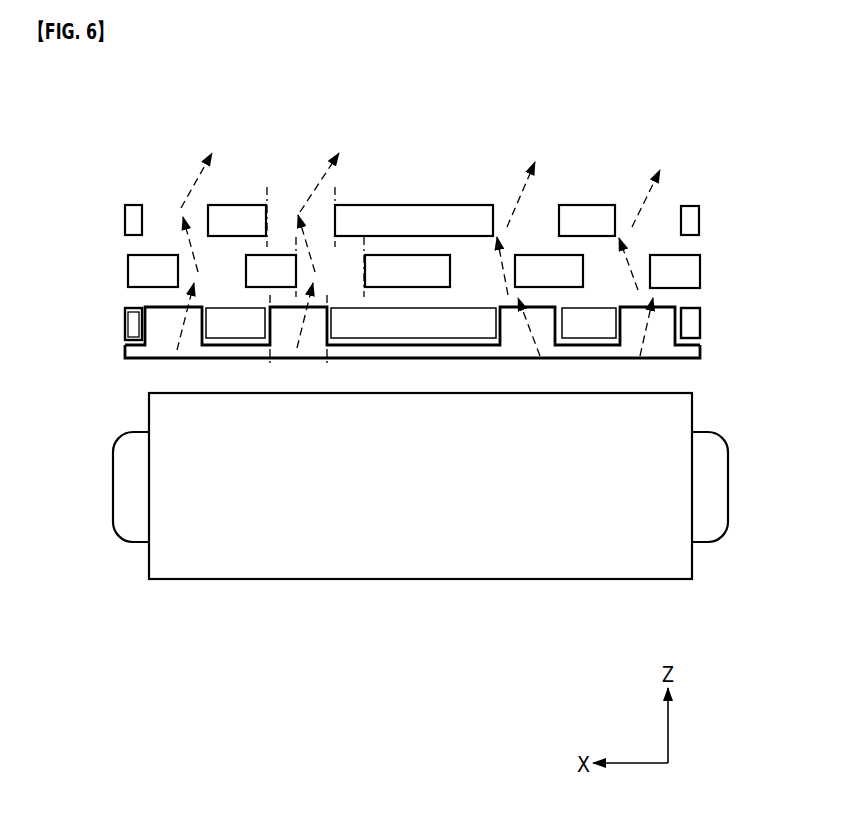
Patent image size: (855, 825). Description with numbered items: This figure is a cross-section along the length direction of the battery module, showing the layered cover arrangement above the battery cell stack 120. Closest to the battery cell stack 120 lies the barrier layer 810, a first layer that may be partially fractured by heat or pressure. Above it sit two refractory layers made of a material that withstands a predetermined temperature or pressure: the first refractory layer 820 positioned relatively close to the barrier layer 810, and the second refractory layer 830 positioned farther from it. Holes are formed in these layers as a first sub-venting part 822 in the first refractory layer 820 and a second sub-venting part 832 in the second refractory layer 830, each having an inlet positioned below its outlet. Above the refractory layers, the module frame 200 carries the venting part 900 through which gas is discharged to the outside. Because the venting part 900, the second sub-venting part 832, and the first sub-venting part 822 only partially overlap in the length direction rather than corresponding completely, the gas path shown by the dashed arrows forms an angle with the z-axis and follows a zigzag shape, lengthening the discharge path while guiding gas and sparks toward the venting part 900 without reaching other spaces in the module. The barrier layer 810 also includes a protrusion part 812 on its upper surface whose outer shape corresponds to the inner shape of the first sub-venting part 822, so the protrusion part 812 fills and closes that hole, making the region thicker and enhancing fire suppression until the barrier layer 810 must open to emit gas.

The battery cell stack 120 is at (718, 488).
The module frame 200 is at (699, 220).
The barrier layer 810 is at (700, 351).
The protrusion part 812 is at (162, 333).
The first refractory layer 820 is at (700, 320).
The first sub-venting part 822 is at (140, 320).
The second refractory layer 830 is at (700, 270).
The second sub-venting part 832 is at (197, 263).
The venting part 900 is at (663, 218).